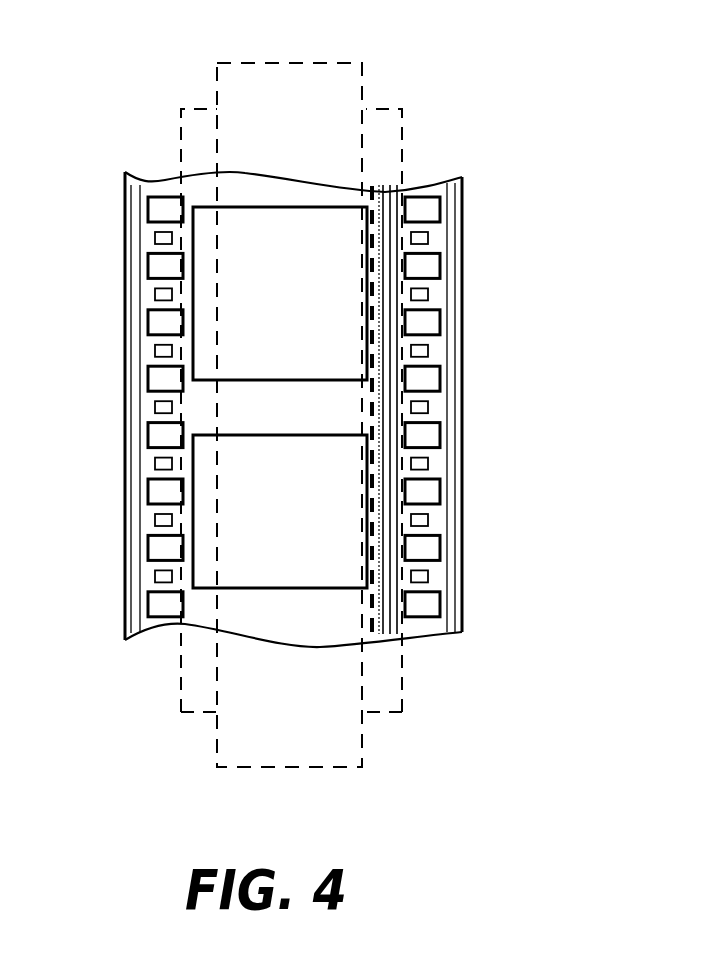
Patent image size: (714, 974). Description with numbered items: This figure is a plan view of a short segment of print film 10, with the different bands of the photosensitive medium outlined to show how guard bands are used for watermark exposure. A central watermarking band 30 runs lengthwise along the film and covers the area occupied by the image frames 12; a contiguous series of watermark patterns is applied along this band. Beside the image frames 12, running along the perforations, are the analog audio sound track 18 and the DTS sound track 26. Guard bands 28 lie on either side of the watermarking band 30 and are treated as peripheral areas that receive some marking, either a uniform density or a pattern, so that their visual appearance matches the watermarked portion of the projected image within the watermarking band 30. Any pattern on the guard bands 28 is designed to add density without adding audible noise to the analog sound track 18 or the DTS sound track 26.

The print film 10 is at (123, 367).
The image frames 12 is at (347, 318).
The analog audio sound track 18 is at (398, 398).
The DTS sound track 26 is at (373, 190).
The guard bands 28 is at (198, 713).
The watermarking band 30 is at (298, 770).